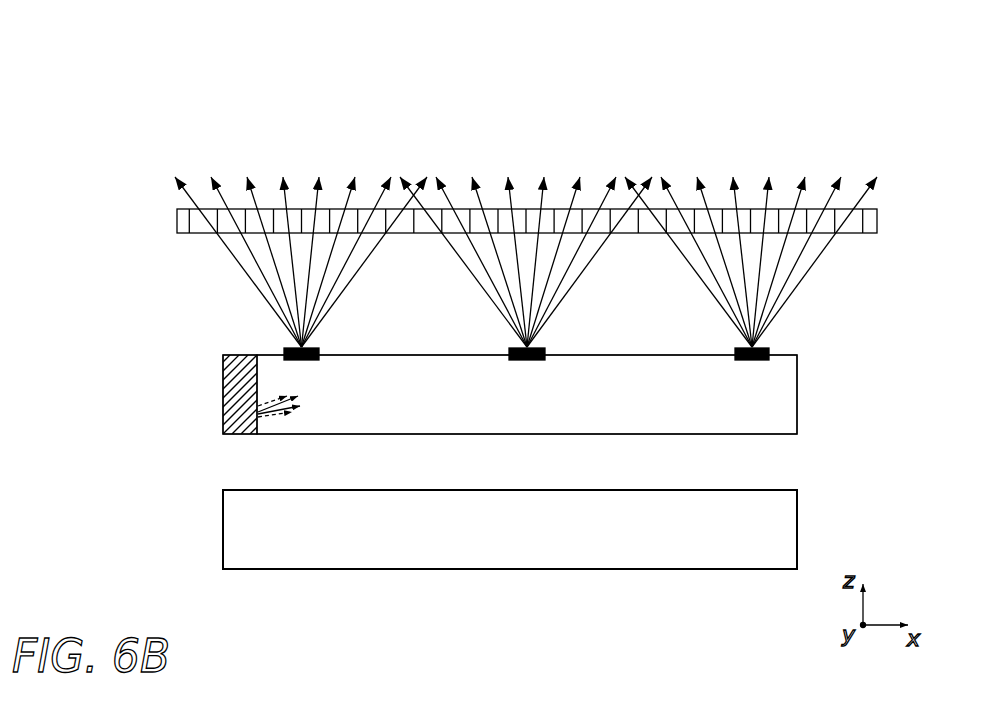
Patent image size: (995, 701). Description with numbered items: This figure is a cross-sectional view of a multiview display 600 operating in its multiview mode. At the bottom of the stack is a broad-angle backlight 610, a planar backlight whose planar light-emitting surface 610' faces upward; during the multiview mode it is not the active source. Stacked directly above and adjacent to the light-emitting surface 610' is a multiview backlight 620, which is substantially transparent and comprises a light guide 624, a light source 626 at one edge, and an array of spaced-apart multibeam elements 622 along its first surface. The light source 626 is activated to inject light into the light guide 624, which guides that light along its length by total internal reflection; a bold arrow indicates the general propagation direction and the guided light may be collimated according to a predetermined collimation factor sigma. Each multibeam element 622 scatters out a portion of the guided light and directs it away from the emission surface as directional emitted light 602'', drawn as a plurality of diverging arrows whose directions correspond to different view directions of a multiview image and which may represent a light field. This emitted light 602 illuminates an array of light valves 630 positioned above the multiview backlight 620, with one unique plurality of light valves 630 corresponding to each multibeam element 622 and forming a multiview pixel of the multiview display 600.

The multiview display 600 is at (798, 84).
The emitted light 602 is at (540, 226).
The directional emitted light 602'' is at (775, 262).
The light valves 630 is at (166, 214).
The multiview backlight 620 is at (808, 355).
The light source 626 is at (242, 355).
The light guide 624 is at (660, 411).
The multibeam elements 622 is at (735, 343).
The broad-angle backlight 610 is at (559, 508).
The light-emitting surface 610' is at (510, 468).